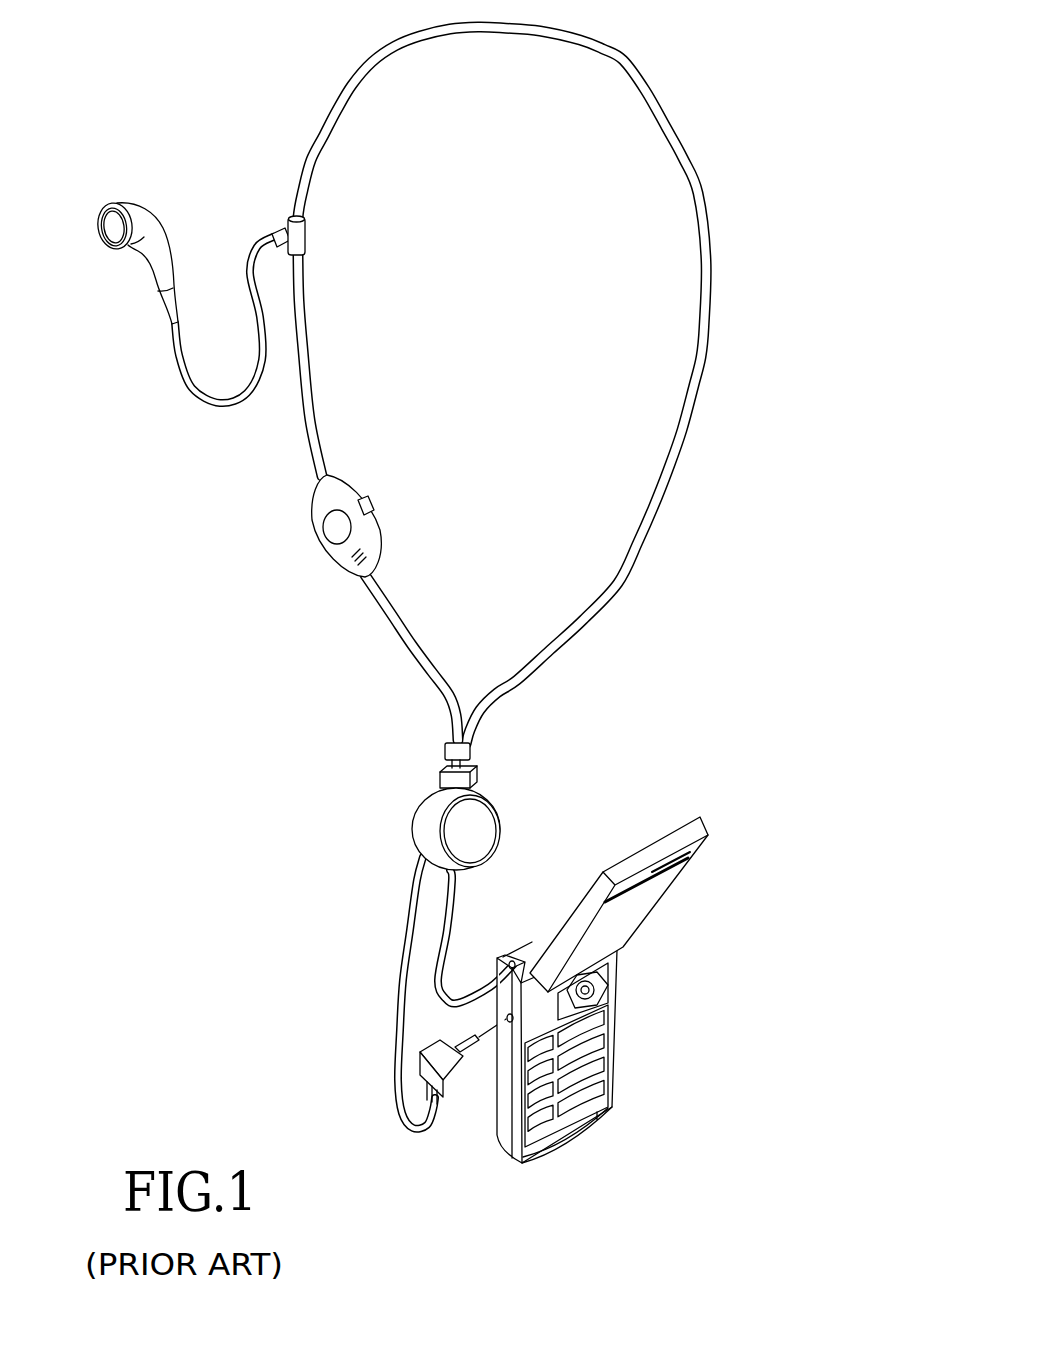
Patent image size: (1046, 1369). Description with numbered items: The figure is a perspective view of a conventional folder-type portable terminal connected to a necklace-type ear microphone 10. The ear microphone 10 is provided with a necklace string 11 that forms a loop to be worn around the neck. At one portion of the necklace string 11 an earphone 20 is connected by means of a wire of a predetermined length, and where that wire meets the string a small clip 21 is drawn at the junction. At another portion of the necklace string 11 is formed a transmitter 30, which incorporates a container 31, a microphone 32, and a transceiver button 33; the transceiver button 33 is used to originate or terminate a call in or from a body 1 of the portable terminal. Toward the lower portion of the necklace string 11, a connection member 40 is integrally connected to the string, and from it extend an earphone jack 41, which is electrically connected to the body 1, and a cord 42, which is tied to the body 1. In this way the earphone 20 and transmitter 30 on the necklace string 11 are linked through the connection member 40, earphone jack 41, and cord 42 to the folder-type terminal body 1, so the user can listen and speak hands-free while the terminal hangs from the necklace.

The body 1 is at (618, 997).
The necklace-type ear microphone 10 is at (624, 47).
The necklace string 11 is at (657, 510).
The earphone 20 is at (142, 216).
The earphone cable clip 21 is at (297, 237).
The transmitter 30 is at (323, 498).
The container 31 is at (333, 535).
The microphone 32 is at (362, 562).
The transceiver button 33 is at (373, 507).
The connection member 40 is at (490, 822).
The earphone jack 41 is at (443, 1075).
The cord 42 is at (455, 885).